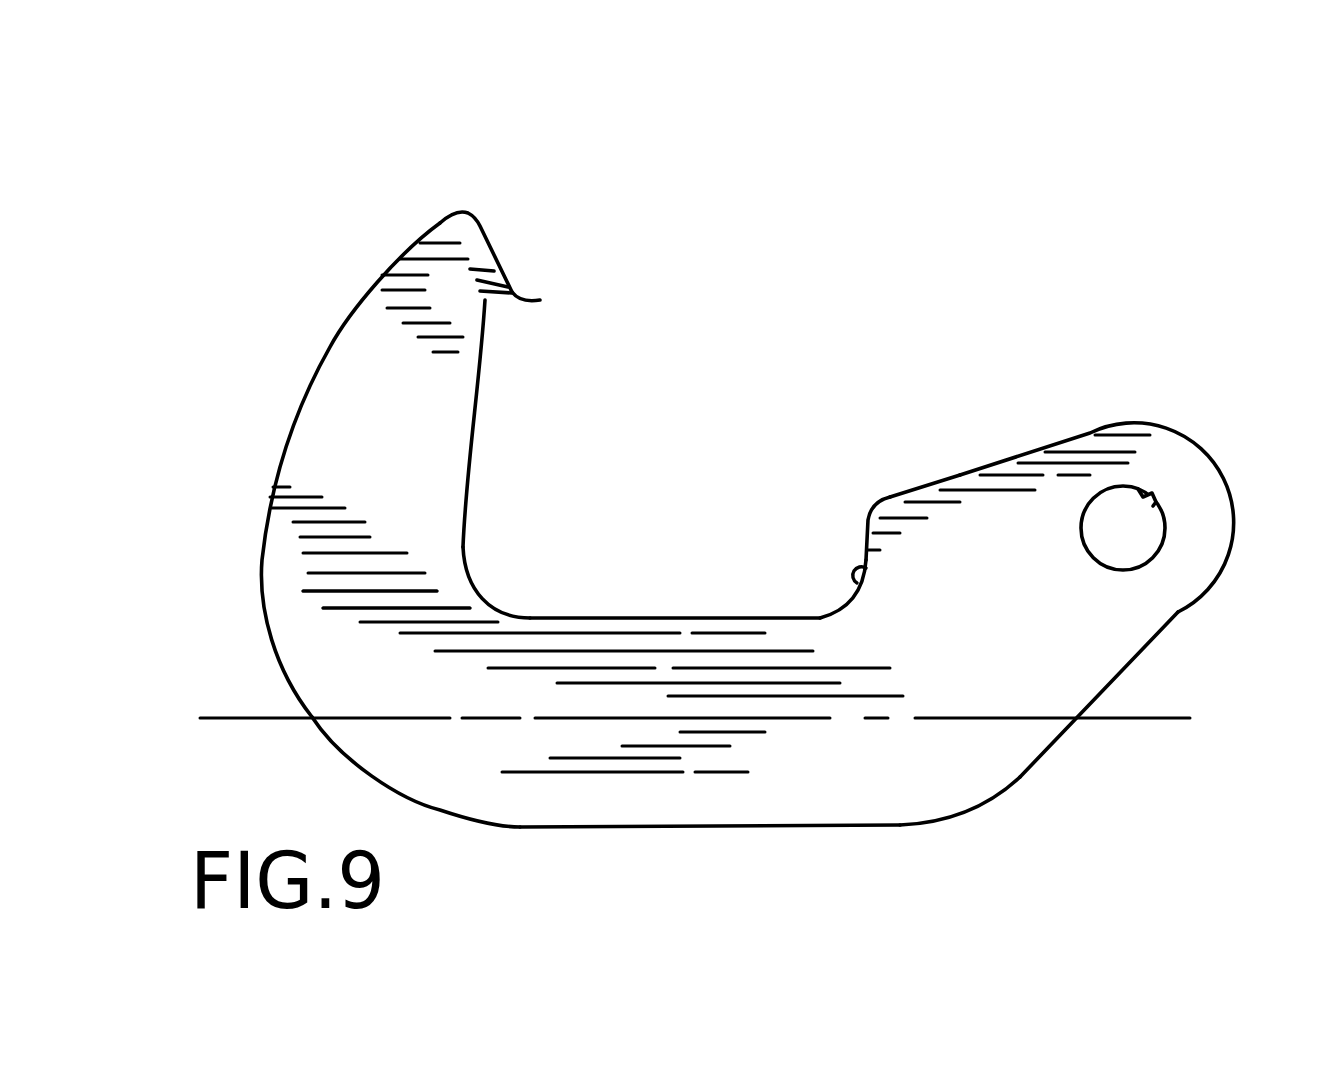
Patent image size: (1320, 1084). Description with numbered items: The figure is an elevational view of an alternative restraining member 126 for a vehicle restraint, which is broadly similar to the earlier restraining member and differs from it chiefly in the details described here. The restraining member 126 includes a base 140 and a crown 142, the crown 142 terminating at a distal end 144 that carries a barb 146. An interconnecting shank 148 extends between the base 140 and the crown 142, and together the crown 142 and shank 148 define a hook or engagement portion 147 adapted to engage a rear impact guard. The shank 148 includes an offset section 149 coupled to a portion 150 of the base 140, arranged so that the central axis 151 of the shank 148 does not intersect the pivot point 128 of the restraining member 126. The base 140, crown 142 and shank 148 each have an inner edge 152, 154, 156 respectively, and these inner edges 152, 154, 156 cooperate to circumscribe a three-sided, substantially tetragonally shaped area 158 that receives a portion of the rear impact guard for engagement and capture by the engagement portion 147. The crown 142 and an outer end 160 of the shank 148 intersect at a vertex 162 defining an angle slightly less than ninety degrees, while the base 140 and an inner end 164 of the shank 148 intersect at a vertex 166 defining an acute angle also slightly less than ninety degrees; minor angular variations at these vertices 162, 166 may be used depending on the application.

The restraining member 126 is at (822, 300).
The pivot point 128 is at (1137, 484).
The base 140 is at (1177, 622).
The crown 142 is at (268, 463).
The distal end 144 is at (437, 222).
The barb 146 is at (540, 300).
The engagement portion 147 is at (437, 580).
The shank 148 is at (690, 806).
The offset section 149 is at (937, 483).
The portion of the base 150 is at (1018, 455).
The central axis 151 is at (985, 720).
The inner edge of the base 152 is at (866, 545).
The inner edge of the crown 154 is at (625, 618).
The inner edge of the shank 156 is at (478, 410).
The area 158 is at (702, 402).
The outer end of the shank 160 is at (338, 650).
The vertex 162 is at (485, 592).
The inner end of the shank 164 is at (850, 648).
The vertex 166 is at (867, 568).